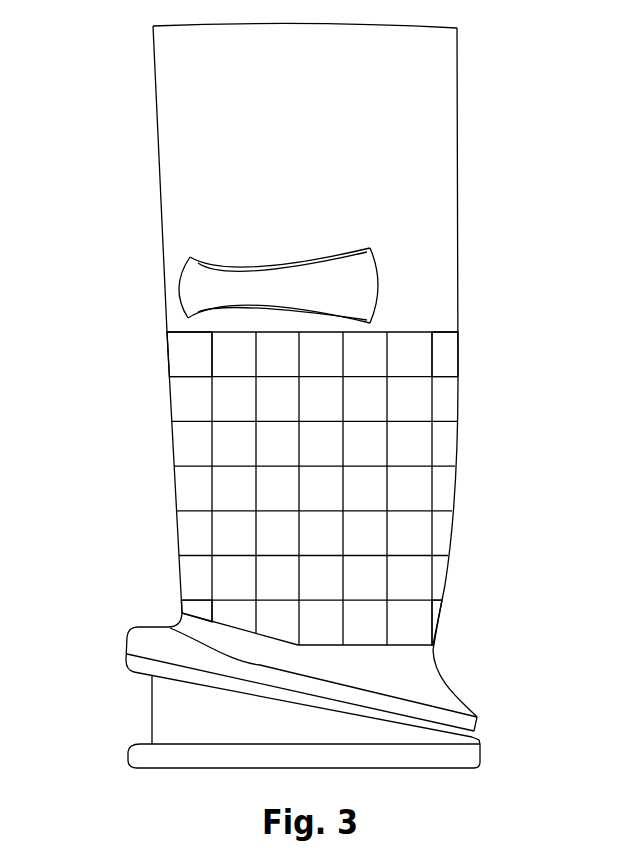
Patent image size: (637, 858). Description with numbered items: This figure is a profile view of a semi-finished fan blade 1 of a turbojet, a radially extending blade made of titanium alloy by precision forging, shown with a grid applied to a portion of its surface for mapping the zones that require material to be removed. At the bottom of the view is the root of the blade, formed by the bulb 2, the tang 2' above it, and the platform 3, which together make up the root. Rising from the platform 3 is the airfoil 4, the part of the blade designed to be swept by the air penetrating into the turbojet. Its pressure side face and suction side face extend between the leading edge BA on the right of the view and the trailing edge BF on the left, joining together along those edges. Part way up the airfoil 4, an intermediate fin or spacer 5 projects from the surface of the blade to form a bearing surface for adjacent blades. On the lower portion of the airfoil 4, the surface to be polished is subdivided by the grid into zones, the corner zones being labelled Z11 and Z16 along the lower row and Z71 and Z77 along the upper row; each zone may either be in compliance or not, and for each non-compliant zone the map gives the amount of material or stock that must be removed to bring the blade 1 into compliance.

The fan blade 1 is at (308, 395).
The bulb 2 is at (267, 755).
The tang 2' is at (280, 710).
The platform 3 is at (145, 642).
The airfoil 4 is at (303, 336).
The intermediate fins or spacers 5 is at (185, 290).
The trailing edge BF is at (153, 57).
The leading edge BA is at (458, 67).
The zone Z11 is at (199, 605).
The zone Z16 is at (435, 618).
The zone Z71 is at (181, 355).
The zone Z77 is at (445, 358).